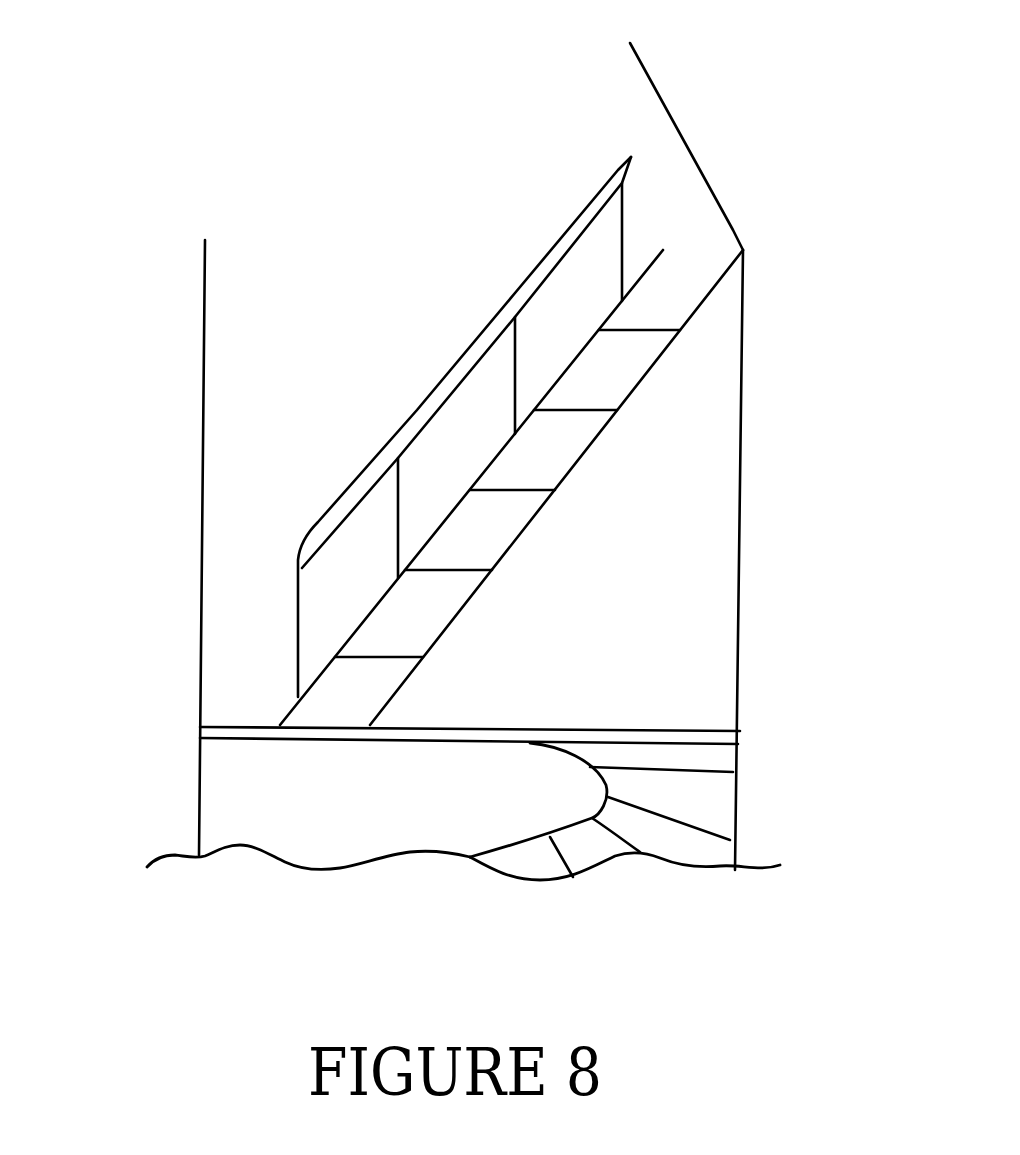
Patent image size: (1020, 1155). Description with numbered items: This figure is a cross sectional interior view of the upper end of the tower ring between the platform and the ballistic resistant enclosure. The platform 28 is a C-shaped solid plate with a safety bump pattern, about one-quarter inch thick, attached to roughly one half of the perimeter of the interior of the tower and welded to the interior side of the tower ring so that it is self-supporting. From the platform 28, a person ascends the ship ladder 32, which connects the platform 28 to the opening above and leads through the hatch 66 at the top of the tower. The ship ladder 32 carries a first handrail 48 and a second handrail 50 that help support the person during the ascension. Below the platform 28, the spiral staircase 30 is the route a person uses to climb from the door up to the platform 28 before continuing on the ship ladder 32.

The hatch 66 is at (693, 153).
The second handrail 50 is at (590, 229).
The first handrail 48 is at (317, 522).
The ship ladder 32 is at (583, 457).
The platform 28 is at (197, 738).
The spiral staircase 30 is at (697, 828).